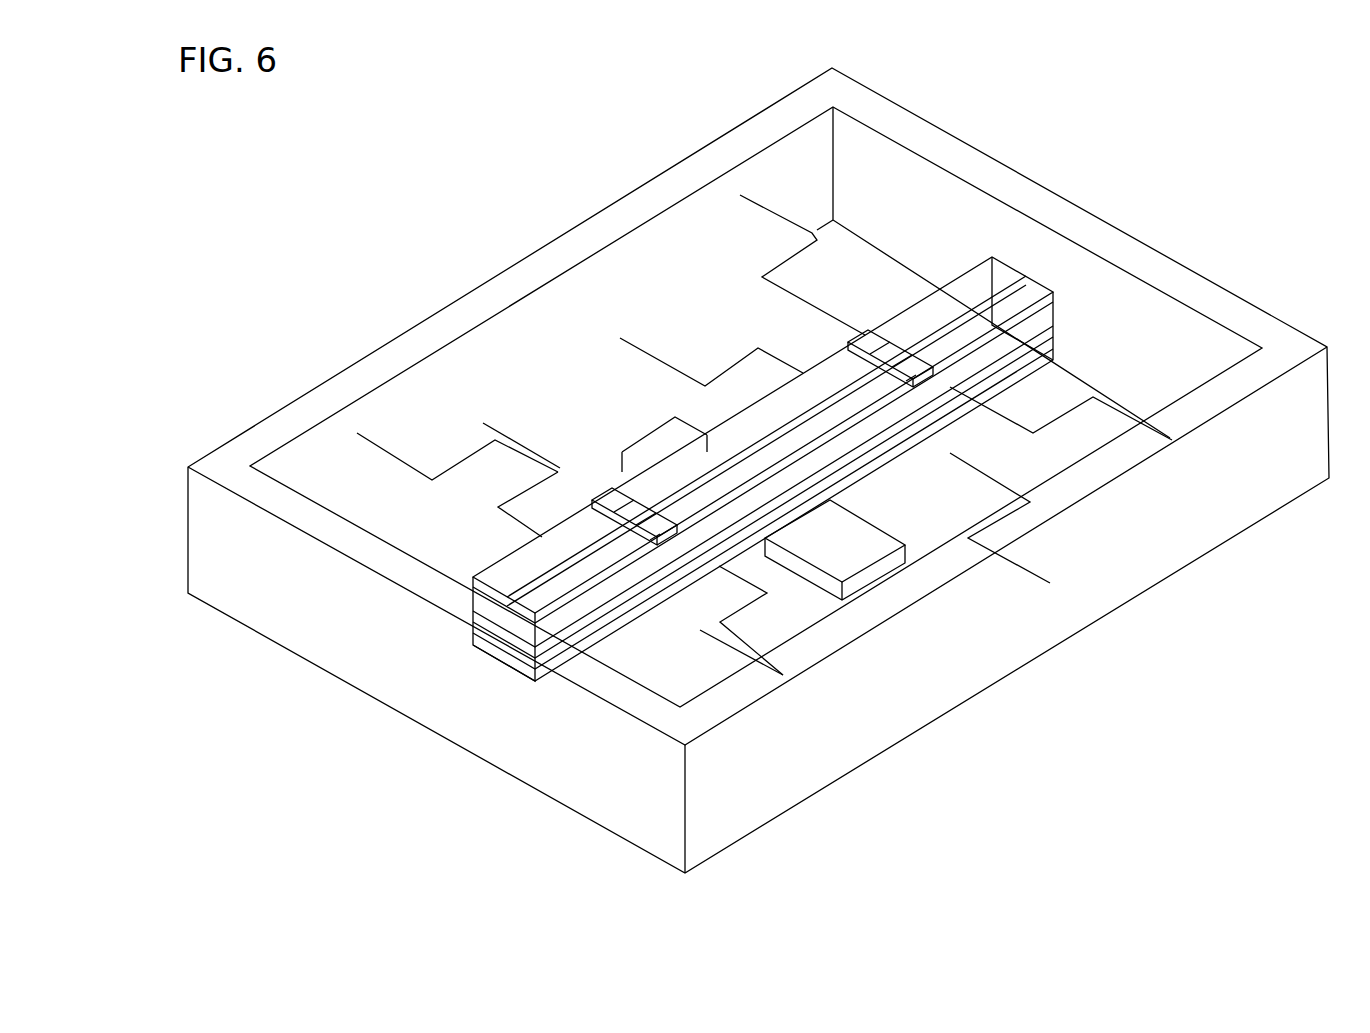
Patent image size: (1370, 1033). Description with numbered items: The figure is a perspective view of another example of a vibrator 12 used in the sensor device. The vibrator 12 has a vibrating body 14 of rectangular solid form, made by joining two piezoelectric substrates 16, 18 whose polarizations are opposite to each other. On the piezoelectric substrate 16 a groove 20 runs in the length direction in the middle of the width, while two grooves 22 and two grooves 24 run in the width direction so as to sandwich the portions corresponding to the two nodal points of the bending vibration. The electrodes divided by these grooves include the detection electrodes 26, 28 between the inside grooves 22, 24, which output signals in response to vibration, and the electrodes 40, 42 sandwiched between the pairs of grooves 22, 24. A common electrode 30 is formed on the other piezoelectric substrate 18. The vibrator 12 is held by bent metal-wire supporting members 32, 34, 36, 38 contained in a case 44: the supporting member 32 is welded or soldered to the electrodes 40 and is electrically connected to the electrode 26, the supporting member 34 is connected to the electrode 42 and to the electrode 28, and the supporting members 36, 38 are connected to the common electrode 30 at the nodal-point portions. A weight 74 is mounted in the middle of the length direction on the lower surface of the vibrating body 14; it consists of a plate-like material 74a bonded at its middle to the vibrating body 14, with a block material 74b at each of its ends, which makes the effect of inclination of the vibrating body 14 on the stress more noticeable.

The vibrator 12 is at (687, 449).
The vibrating body 14 is at (657, 514).
The piezoelectric substrate 16 is at (475, 620).
The piezoelectric substrate 18 is at (475, 632).
The groove 20 is at (1006, 283).
The grooves 22 is at (611, 490).
The grooves 24 is at (848, 338).
The electrode 26 is at (780, 402).
The electrode 28 is at (815, 432).
The common electrode 30 is at (500, 662).
The supporting member 32 is at (528, 462).
The supporting member 34 is at (848, 338).
The supporting member 36 is at (522, 522).
The supporting member 38 is at (722, 365).
The electrodes 40 is at (603, 530).
The electrode 42 is at (912, 393).
The case 44 is at (947, 687).
The weight 74 is at (859, 541).
The plate-like material 74a is at (857, 560).
The block material 74b is at (620, 450).